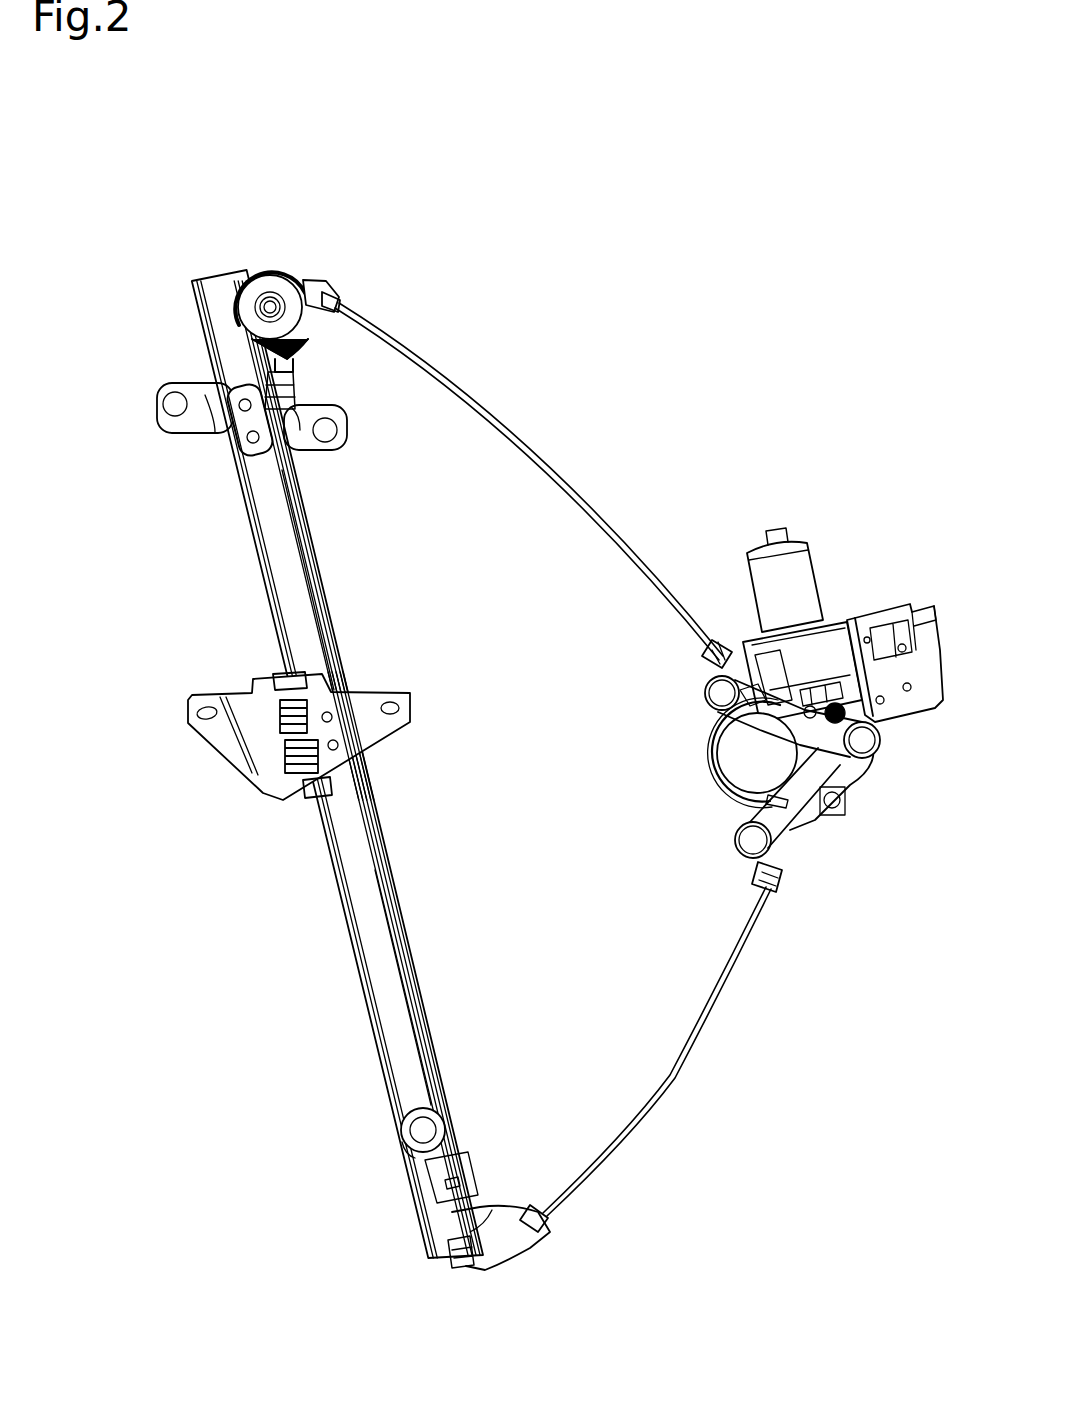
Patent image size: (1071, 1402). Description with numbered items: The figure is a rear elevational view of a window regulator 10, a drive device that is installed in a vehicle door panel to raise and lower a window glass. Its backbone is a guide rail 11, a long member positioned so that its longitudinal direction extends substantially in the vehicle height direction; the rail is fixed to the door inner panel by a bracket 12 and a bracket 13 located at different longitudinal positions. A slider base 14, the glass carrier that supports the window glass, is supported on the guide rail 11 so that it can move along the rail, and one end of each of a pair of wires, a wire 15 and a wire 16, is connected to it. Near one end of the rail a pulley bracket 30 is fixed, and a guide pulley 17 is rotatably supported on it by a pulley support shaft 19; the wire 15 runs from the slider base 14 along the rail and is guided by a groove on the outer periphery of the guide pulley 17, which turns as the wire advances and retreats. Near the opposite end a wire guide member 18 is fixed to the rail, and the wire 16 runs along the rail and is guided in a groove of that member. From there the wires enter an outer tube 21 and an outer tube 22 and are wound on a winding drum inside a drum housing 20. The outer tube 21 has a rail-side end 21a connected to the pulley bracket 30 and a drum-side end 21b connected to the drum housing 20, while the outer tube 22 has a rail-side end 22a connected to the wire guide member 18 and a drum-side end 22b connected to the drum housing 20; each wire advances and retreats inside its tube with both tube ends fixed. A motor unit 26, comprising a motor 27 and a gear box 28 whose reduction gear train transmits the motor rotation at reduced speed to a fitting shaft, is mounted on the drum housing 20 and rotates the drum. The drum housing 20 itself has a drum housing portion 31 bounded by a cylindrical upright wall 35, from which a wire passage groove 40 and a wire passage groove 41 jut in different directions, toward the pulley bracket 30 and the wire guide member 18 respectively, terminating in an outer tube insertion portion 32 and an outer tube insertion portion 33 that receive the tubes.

The window regulator 10 is at (630, 414).
The guide rail 11 is at (362, 825).
The bracket 12 is at (195, 420).
The bracket 13 is at (405, 1136).
The slider base 14 is at (343, 733).
The wire 15 is at (303, 558).
The wire 16 is at (378, 958).
The guide pulley 17 is at (262, 287).
The wire guide member 18 is at (506, 1232).
The pulley support shaft 19 is at (258, 307).
The drum housing 20 is at (706, 798).
The outer tube 21 is at (506, 428).
The rail-side end 21a is at (334, 313).
The drum-side end 21b is at (717, 645).
The outer tube 22 is at (688, 1043).
The rail-side end 22a is at (546, 1210).
The drum-side end 22b is at (772, 887).
The motor unit 26 is at (855, 600).
The motor 27 is at (795, 578).
The gear box 28 is at (898, 692).
The pulley bracket 30 is at (302, 272).
The drum housing portion 31 is at (738, 772).
The outer tube insertion portion 32 is at (710, 665).
The outer tube insertion portion 33 is at (758, 868).
The cylindrical upright wall 35 is at (710, 746).
The wire passage groove 40 is at (702, 697).
The wire passage groove 41 is at (788, 822).